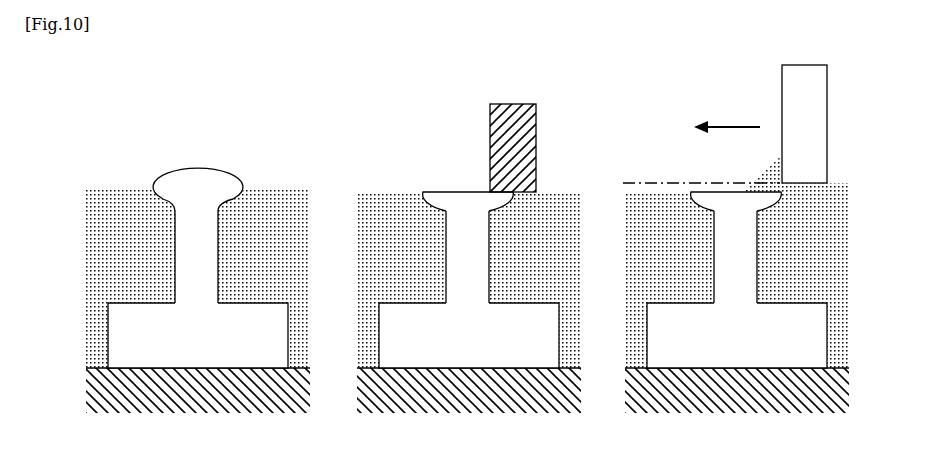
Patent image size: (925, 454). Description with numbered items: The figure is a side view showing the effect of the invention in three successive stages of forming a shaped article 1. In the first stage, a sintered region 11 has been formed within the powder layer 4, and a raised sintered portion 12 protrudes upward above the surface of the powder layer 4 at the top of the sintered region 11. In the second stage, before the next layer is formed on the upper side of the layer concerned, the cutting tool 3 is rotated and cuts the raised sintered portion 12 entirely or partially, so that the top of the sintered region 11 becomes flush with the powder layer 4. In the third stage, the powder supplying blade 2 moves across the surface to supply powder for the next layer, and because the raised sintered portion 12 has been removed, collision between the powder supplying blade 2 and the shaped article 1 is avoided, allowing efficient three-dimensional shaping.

The shaped article 1 is at (104, 338).
The sintered region 11 is at (198, 282).
The raised sintered portion 12 is at (207, 178).
The powder layer 4 is at (122, 215).
The tool 3 is at (515, 140).
The powder supplying blade 2 is at (798, 127).